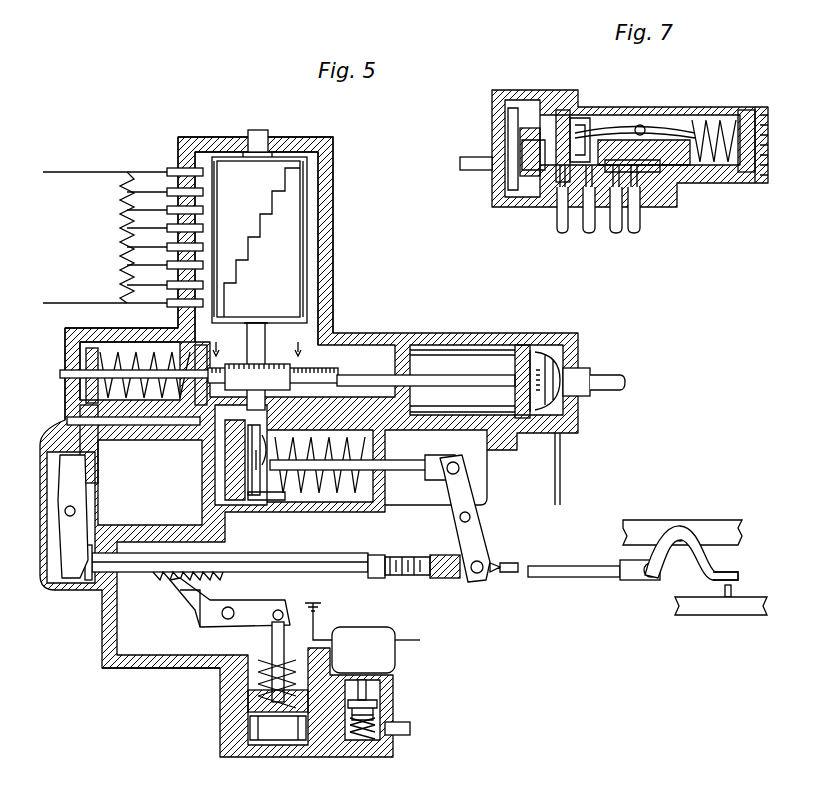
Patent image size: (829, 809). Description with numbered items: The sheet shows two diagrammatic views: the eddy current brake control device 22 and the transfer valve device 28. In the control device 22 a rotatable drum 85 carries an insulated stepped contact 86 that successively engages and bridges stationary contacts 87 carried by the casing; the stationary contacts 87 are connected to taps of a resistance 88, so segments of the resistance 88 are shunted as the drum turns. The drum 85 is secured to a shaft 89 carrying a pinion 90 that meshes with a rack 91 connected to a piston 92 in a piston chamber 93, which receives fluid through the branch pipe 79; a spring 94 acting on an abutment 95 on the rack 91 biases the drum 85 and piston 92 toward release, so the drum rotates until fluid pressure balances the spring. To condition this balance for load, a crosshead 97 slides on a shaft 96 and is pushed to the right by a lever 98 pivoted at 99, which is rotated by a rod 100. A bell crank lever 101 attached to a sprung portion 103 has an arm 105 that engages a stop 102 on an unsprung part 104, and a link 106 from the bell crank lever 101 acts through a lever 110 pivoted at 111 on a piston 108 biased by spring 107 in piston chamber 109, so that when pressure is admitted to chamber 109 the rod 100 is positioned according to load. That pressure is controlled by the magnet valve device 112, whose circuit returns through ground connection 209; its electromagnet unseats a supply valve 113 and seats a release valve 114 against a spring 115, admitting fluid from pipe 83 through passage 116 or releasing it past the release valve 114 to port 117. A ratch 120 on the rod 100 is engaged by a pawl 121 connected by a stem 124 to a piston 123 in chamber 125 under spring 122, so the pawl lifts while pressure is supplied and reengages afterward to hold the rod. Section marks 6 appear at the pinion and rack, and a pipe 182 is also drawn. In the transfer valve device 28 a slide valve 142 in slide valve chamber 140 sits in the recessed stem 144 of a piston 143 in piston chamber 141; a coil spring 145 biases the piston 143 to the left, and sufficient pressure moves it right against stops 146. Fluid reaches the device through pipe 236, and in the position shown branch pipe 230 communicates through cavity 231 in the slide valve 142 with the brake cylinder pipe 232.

In FIG. 5, the eddy current brake control device 22 is at (192, 135).
In FIG. 5, the rotatable drum 85 is at (237, 172).
In FIG. 5, the stepped contact 86 is at (283, 248).
In FIG. 5, the stationary contacts 87 is at (205, 303).
In FIG. 5, the resistance 88 is at (122, 236).
In FIG. 5, the shaft 89 is at (244, 330).
In FIG. 5, the pinion 90 is at (278, 366).
In FIG. 5, the rack 91 is at (376, 380).
In FIG. 5, the piston 92 is at (521, 345).
In FIG. 5, the piston chamber 93 is at (548, 360).
In FIG. 5, the branch pipe 79 is at (600, 380).
In FIG. 5, the spring 94 is at (118, 355).
In FIG. 5, the abutment 95 is at (195, 358).
In FIG. 5, the shaft 96 is at (150, 420).
In FIG. 5, the crosshead 97 is at (90, 425).
In FIG. 5, the lever 98 is at (80, 494).
In FIG. 5, the pivot 99 is at (75, 511).
In FIG. 5, the piston chamber 109 is at (230, 452).
In FIG. 5, the piston 108 is at (262, 500).
In FIG. 5, the rod 100 is at (300, 545).
In FIG. 5, the spring 107 is at (340, 495).
In FIG. 5, the pivot 111 is at (458, 520).
In FIG. 5, the lever 110 is at (480, 530).
In FIG. 5, the link 106 is at (555, 567).
In FIG. 5, the sprung portion 103 is at (652, 510).
In FIG. 5, the bell crank lever 101 is at (692, 543).
In FIG. 5, the arm 105 is at (722, 573).
In FIG. 5, the stop 102 is at (731, 590).
In FIG. 5, the unsprung part 104 is at (728, 612).
In FIG. 5, the ratch 120 is at (205, 578).
In FIG. 5, the spring 122 is at (282, 630).
In FIG. 5, the magnet valve device 112 is at (362, 635).
In FIG. 5, the ground connection 209 is at (331, 621).
In FIG. 5, the pawl 121 is at (180, 600).
In FIG. 5, the stem 124 is at (212, 615).
In FIG. 5, the passage 116 is at (150, 660).
In FIG. 5, the release valve 114 is at (385, 687).
In FIG. 5, the port 117 is at (388, 697).
In FIG. 5, the pipe 83 is at (410, 727).
In FIG. 5, the supply valve 113 is at (395, 735).
In FIG. 5, the piston 123 is at (265, 720).
In FIG. 5, the chamber 125 is at (293, 720).
In FIG. 5, the spring 115 is at (362, 742).
In FIG. 5, the section line 6 is at (259, 356).
In FIG. 7, the transfer valve device 28 is at (512, 92).
In FIG. 7, the stops 146 is at (562, 170).
In FIG. 7, the slide valve chamber 140 is at (580, 130).
In FIG. 7, the slide valve 142 is at (648, 160).
In FIG. 7, the stem 144 is at (675, 140).
In FIG. 7, the coil spring 145 is at (735, 115).
In FIG. 7, the piston chamber 141 is at (518, 120).
In FIG. 7, the piston 143 is at (522, 140).
In FIG. 7, the pipe 236 is at (560, 217).
In FIG. 7, the port tube 182 is at (588, 217).
In FIG. 7, the brake cylinder pipe 232 is at (616, 220).
In FIG. 7, the branch pipe 230 is at (637, 217).
In FIG. 7, the cavity 231 is at (660, 200).